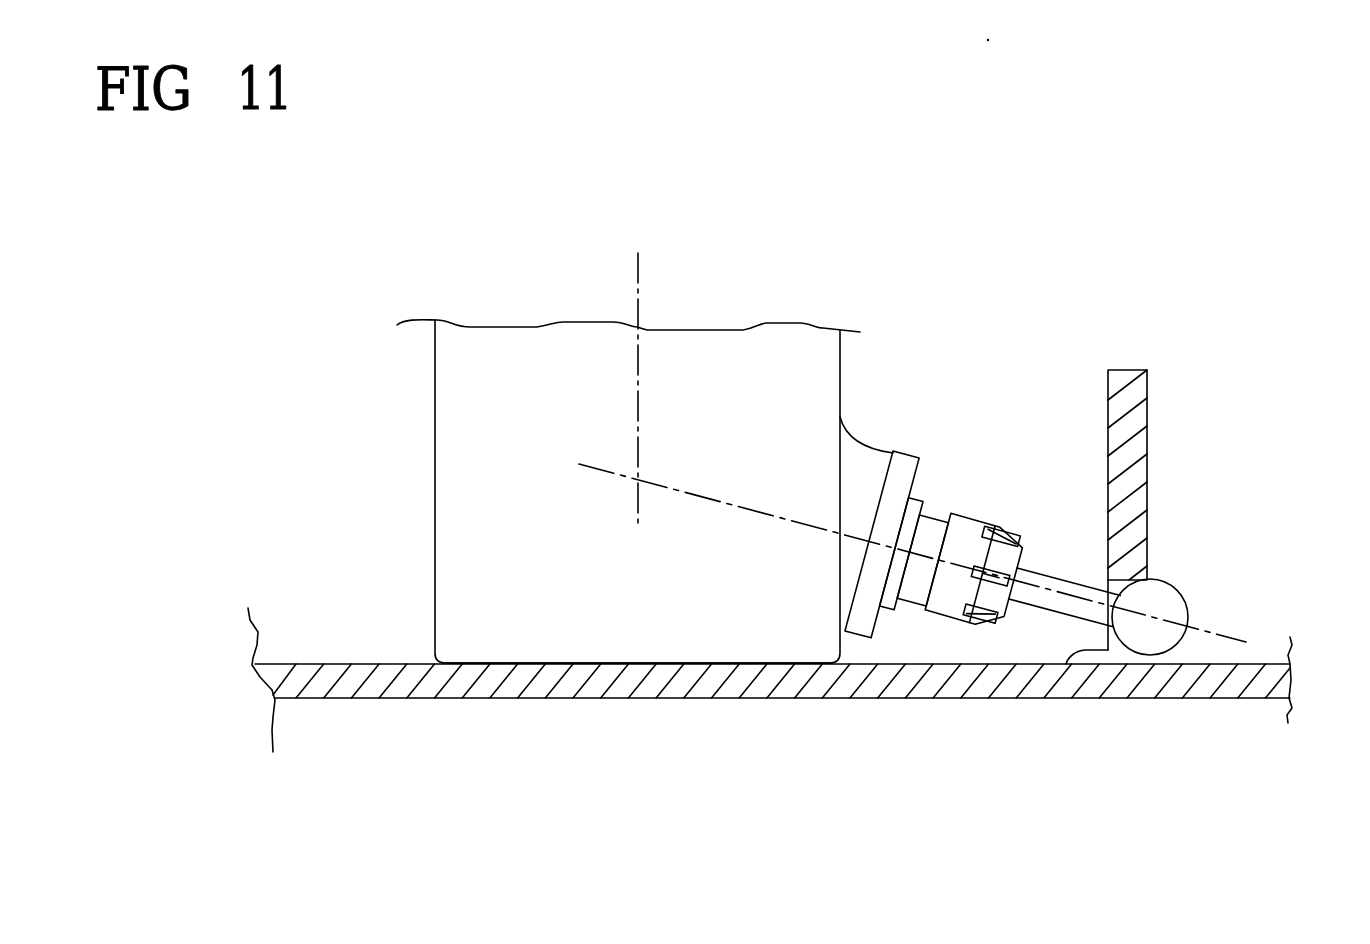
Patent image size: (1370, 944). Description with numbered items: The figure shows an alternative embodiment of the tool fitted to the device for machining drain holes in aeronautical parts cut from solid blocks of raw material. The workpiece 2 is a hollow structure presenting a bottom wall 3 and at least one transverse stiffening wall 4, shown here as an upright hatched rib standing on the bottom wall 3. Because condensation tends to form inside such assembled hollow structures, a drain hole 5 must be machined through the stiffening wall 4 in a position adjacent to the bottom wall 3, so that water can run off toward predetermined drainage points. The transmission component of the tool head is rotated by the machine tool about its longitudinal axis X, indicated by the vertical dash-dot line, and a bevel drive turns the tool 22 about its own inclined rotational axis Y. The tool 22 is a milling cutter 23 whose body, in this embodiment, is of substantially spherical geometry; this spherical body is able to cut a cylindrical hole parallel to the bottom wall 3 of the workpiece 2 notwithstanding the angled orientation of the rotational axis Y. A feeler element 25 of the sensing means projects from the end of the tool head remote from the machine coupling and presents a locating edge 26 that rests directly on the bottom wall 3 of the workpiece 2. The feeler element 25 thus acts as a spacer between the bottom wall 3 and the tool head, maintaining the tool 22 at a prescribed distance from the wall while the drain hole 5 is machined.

The workpiece 2 is at (850, 704).
The bottom wall 3 is at (1226, 688).
The transverse stiffening wall 4 is at (1138, 393).
The drain hole 5 is at (1070, 660).
The tool 22 is at (908, 446).
The milling cutter 23 is at (1167, 603).
The feeler element 25 is at (483, 420).
The locating edge 26 is at (610, 664).
The longitudinal axis X is at (640, 274).
The rotational axis Y is at (1233, 642).